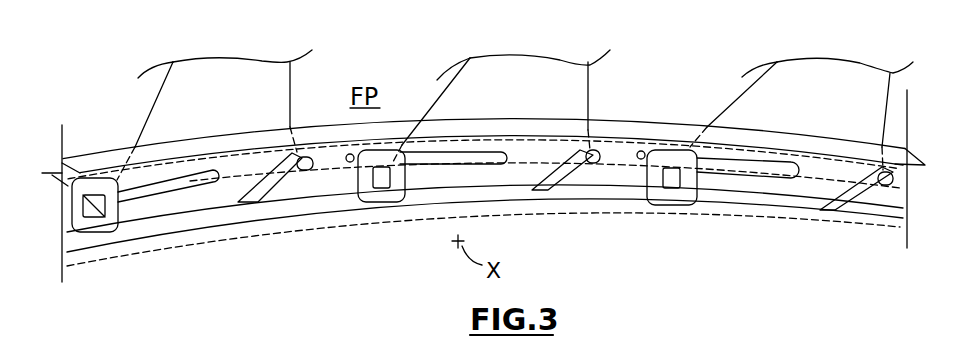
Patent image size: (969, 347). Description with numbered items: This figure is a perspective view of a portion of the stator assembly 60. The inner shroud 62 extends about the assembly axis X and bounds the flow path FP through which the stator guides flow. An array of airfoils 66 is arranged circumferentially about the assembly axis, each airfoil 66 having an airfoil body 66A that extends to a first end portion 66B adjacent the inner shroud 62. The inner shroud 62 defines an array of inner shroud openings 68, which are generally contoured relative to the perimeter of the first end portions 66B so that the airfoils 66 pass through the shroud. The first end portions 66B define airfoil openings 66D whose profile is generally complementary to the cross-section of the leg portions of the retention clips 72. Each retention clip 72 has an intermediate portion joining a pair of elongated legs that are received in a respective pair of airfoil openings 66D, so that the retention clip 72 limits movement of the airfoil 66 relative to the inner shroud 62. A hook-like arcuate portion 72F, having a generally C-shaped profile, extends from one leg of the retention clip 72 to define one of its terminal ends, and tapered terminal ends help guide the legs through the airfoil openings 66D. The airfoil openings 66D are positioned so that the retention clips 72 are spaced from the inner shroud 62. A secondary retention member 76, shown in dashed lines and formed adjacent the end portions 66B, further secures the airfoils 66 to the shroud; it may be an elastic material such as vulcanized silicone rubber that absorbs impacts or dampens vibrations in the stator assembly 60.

The stator assembly 60 is at (97, 74).
The inner shroud 62 is at (90, 160).
The airfoil 66 is at (292, 80).
The airfoil body 66A is at (593, 98).
The first end portion 66B is at (240, 202).
The airfoil opening 66D is at (215, 182).
The inner shroud opening 68 is at (580, 143).
The retention clip 72 is at (163, 206).
The arcuate portion 72F is at (333, 172).
The secondary retention member 76 is at (104, 272).